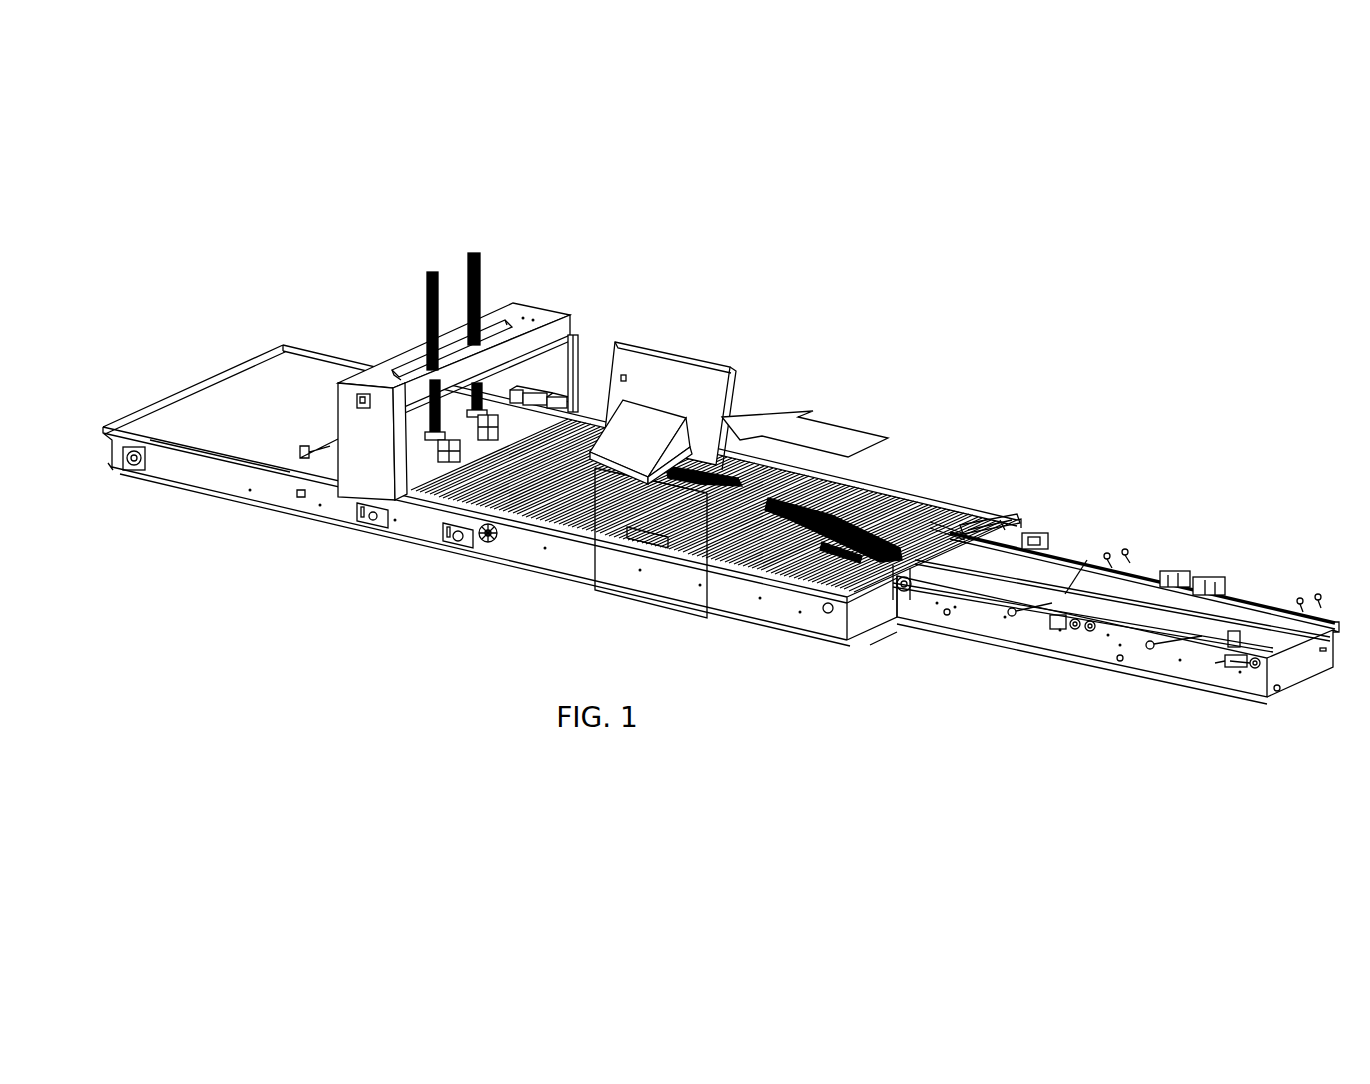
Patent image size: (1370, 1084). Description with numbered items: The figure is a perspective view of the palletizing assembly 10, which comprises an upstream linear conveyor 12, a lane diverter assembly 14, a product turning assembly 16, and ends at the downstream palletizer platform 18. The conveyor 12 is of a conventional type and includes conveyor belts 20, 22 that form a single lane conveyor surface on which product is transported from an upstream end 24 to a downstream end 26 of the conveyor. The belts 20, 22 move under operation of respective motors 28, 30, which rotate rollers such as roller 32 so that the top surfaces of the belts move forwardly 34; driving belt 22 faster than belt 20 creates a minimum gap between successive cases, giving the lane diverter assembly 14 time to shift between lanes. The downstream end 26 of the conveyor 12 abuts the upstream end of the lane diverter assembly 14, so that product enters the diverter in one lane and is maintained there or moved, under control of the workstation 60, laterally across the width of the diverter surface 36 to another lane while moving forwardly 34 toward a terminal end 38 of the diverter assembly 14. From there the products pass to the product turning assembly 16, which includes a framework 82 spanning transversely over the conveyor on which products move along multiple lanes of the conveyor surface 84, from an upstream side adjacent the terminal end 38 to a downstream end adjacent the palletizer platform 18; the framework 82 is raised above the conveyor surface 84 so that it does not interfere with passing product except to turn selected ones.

The palletizing assembly 10 is at (905, 249).
The upstream linear conveyor 12 is at (1020, 690).
The lane diverter assembly 14 is at (968, 430).
The product turning assembly 16 is at (548, 258).
The downstream palletizer platform 18 is at (192, 528).
The conveyor belt 20 is at (1208, 624).
The conveyor belt 22 is at (1008, 582).
The upstream end 24 is at (1292, 708).
The downstream end 26 is at (897, 640).
The motor 28 is at (1208, 577).
The motor 30 is at (1036, 538).
The roller 32 is at (1252, 668).
The forward direction of movement 34 is at (836, 431).
The diverter surface 36 is at (942, 522).
The terminal end 38 is at (465, 584).
The workstation 60 is at (618, 445).
The framework 82 is at (594, 326).
The conveyor surface 84 is at (445, 483).